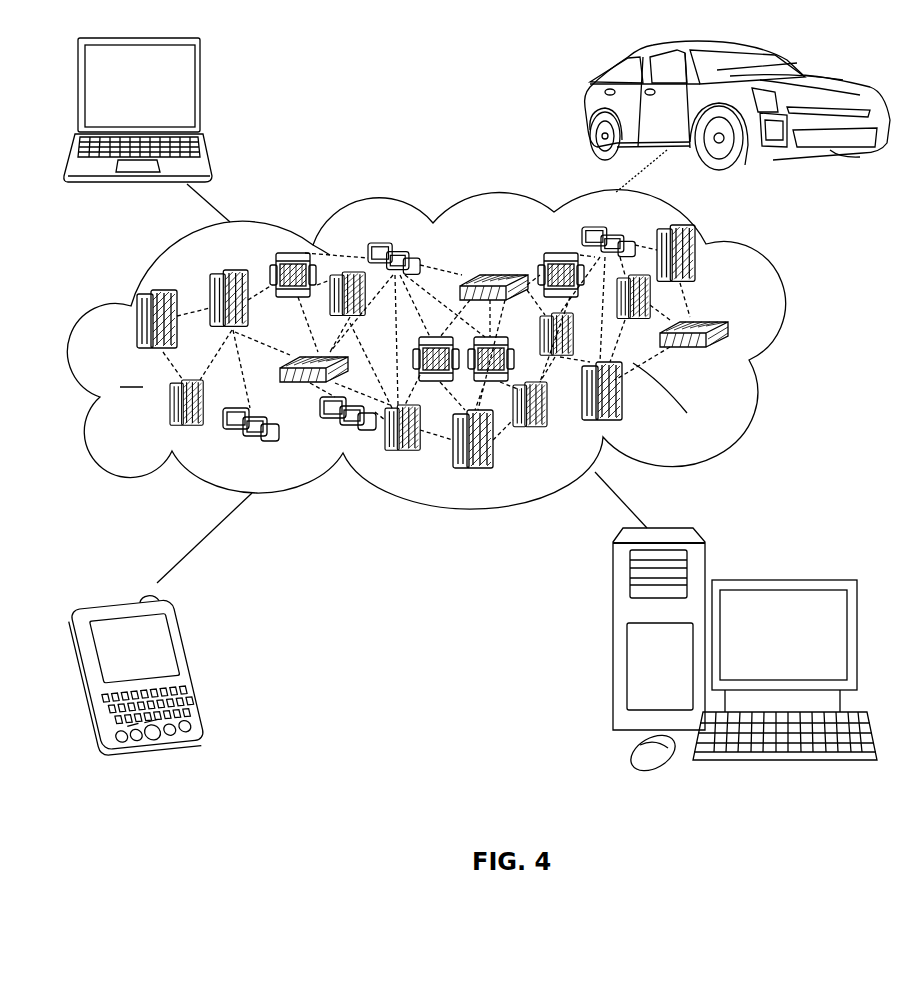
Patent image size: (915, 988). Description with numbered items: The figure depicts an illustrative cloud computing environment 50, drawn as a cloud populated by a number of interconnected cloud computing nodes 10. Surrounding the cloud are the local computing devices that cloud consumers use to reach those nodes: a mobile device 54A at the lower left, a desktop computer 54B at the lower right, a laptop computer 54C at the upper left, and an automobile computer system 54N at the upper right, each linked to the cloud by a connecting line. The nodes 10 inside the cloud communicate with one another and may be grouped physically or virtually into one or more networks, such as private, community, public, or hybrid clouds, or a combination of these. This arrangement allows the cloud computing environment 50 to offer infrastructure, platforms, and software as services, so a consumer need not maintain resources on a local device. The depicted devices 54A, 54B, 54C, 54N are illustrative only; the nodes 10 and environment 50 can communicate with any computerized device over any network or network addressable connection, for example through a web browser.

The cloud computing environment 50 is at (782, 328).
The cloud computing node 10 is at (736, 361).
The mobile device 54A is at (190, 662).
The desktop computer 54B is at (779, 578).
The laptop computer 54C is at (200, 93).
The automobile computer system 54N is at (590, 108).